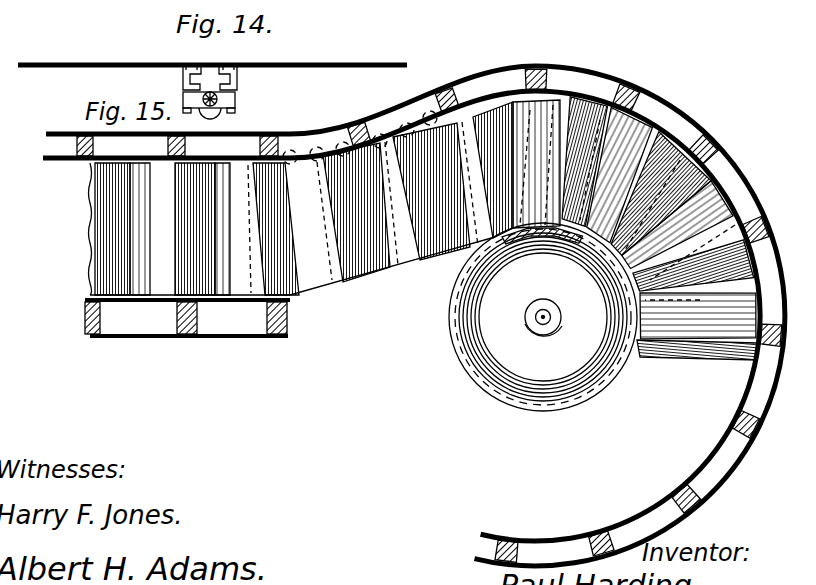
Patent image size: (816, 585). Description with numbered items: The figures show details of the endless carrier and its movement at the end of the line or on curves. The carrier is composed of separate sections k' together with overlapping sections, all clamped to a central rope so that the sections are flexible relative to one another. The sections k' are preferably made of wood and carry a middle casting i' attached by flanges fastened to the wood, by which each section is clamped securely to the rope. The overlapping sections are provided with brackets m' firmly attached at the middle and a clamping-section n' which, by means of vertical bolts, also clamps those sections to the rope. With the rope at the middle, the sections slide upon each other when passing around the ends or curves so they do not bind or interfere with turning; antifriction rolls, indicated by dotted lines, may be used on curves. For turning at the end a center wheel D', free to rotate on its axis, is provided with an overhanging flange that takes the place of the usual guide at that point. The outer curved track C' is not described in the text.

In FIG. 14, the casting i' is at (212, 52).
In FIG. 15, the casting i' is at (443, 219).
In FIG. 15, the carrier section k' is at (423, 228).
In FIG. 15, the curved track C' is at (414, 316).
In FIG. 15, the center wheel D' is at (543, 317).
In FIG. 14, the bracket m' is at (224, 81).
In FIG. 14, the clamping-section n' is at (221, 107).